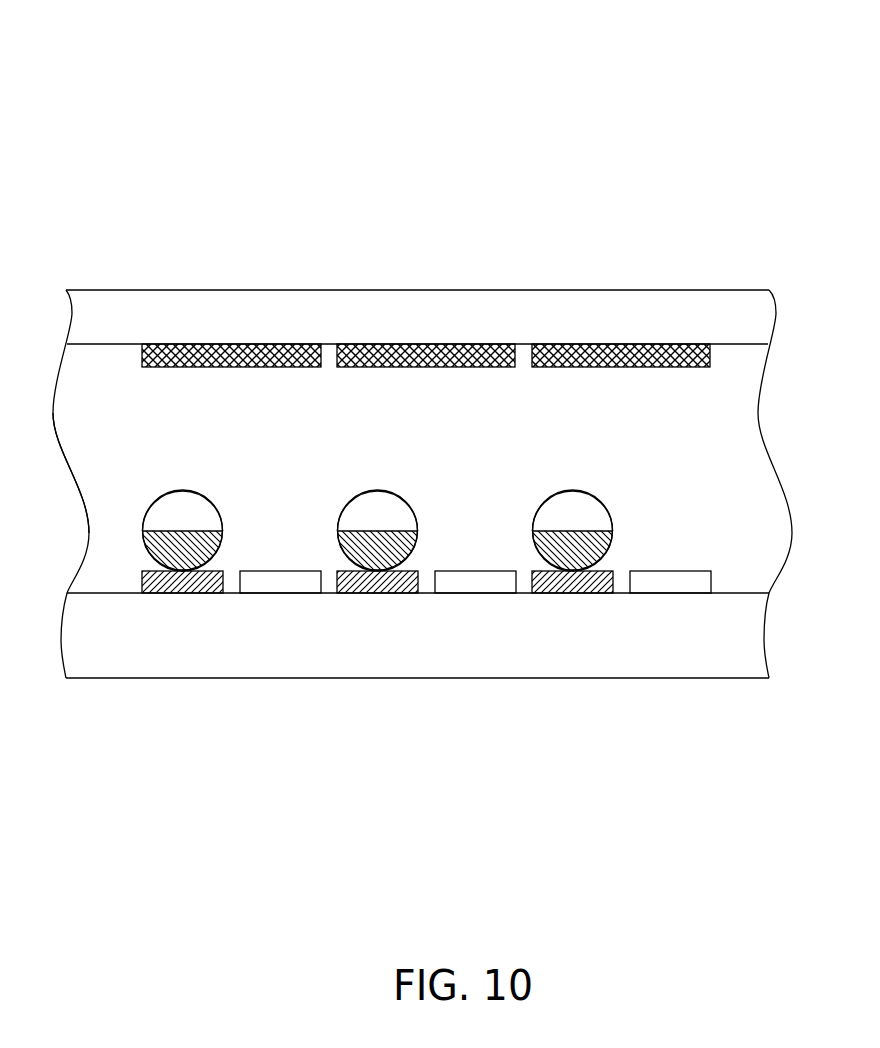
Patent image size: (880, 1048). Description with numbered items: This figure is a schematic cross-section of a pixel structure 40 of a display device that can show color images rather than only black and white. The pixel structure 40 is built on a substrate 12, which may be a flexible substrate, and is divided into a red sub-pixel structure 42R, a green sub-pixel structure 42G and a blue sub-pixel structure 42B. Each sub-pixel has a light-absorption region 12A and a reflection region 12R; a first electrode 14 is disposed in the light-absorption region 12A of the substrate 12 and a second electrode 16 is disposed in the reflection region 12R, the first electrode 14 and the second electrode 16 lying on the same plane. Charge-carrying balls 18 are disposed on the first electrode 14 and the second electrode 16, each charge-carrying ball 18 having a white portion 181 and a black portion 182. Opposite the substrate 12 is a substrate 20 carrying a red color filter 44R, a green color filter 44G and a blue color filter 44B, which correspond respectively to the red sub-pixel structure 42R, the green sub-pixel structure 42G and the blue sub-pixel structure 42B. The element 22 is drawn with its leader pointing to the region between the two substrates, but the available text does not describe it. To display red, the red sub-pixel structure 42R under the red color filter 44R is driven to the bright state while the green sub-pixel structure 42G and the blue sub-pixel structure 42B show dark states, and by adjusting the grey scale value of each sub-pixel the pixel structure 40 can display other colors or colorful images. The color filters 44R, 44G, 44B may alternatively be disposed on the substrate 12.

The pixel structure 40 is at (742, 108).
The red sub-pixel structure 42R is at (142, 197).
The green sub-pixel structure 42G is at (337, 197).
The blue sub-pixel structure 42B is at (532, 197).
The light-absorption region 12A is at (142, 253).
The reflection region 12R is at (239, 253).
The substrate 20 is at (753, 330).
The red color filter 44R is at (233, 367).
The green color filter 44G is at (428, 367).
The blue color filter 44B is at (623, 367).
The liquid layer 22 is at (758, 472).
The charge-carrying ball 18 is at (233, 438).
The white portion 181 is at (211, 503).
The black portion 182 is at (223, 545).
The first electrode 14 is at (183, 593).
The second electrode 16 is at (283, 583).
The substrate 12 is at (753, 669).